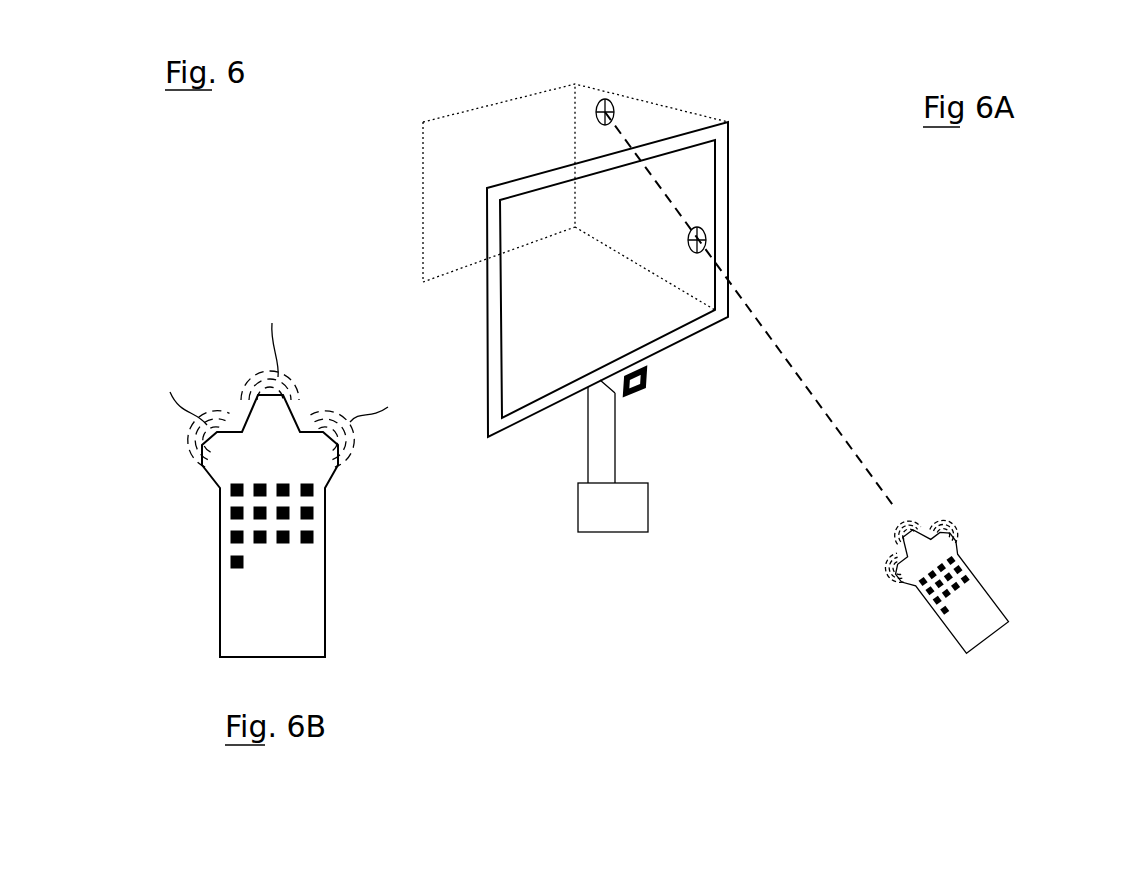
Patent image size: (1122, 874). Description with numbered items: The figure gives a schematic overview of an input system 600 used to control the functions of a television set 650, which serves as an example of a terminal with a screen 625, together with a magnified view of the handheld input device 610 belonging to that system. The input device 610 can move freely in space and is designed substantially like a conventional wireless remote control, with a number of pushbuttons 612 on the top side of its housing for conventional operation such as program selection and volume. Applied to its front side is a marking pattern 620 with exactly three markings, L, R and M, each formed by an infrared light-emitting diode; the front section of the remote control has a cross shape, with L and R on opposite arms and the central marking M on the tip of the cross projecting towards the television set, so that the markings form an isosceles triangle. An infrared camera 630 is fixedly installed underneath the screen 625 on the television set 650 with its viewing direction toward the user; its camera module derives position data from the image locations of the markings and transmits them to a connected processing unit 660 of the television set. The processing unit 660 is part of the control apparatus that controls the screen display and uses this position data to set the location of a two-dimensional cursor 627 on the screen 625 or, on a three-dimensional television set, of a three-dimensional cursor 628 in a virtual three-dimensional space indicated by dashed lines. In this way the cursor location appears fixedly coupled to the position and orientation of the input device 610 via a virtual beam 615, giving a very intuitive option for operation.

In FIG. 6A, the input system 600 is at (995, 218).
In FIG. 6A, the handheld input device 610 is at (981, 581).
In FIG. 6B, the handheld input device 610 is at (269, 470).
In FIG. 6B, the pushbuttons 612 is at (232, 533).
In FIG. 6A, the virtual beam 615 is at (822, 407).
In FIG. 6B, the marking pattern 620 is at (148, 442).
In FIG. 6A, the screen 625 is at (703, 163).
In FIG. 6A, the 2D cursor 627 is at (706, 240).
In FIG. 6A, the 3D cursor 628 is at (614, 100).
In FIG. 6A, the infrared camera 630 is at (655, 372).
In FIG. 6A, the television set 650 is at (806, 213).
In FIG. 6A, the processing unit 660 is at (645, 510).